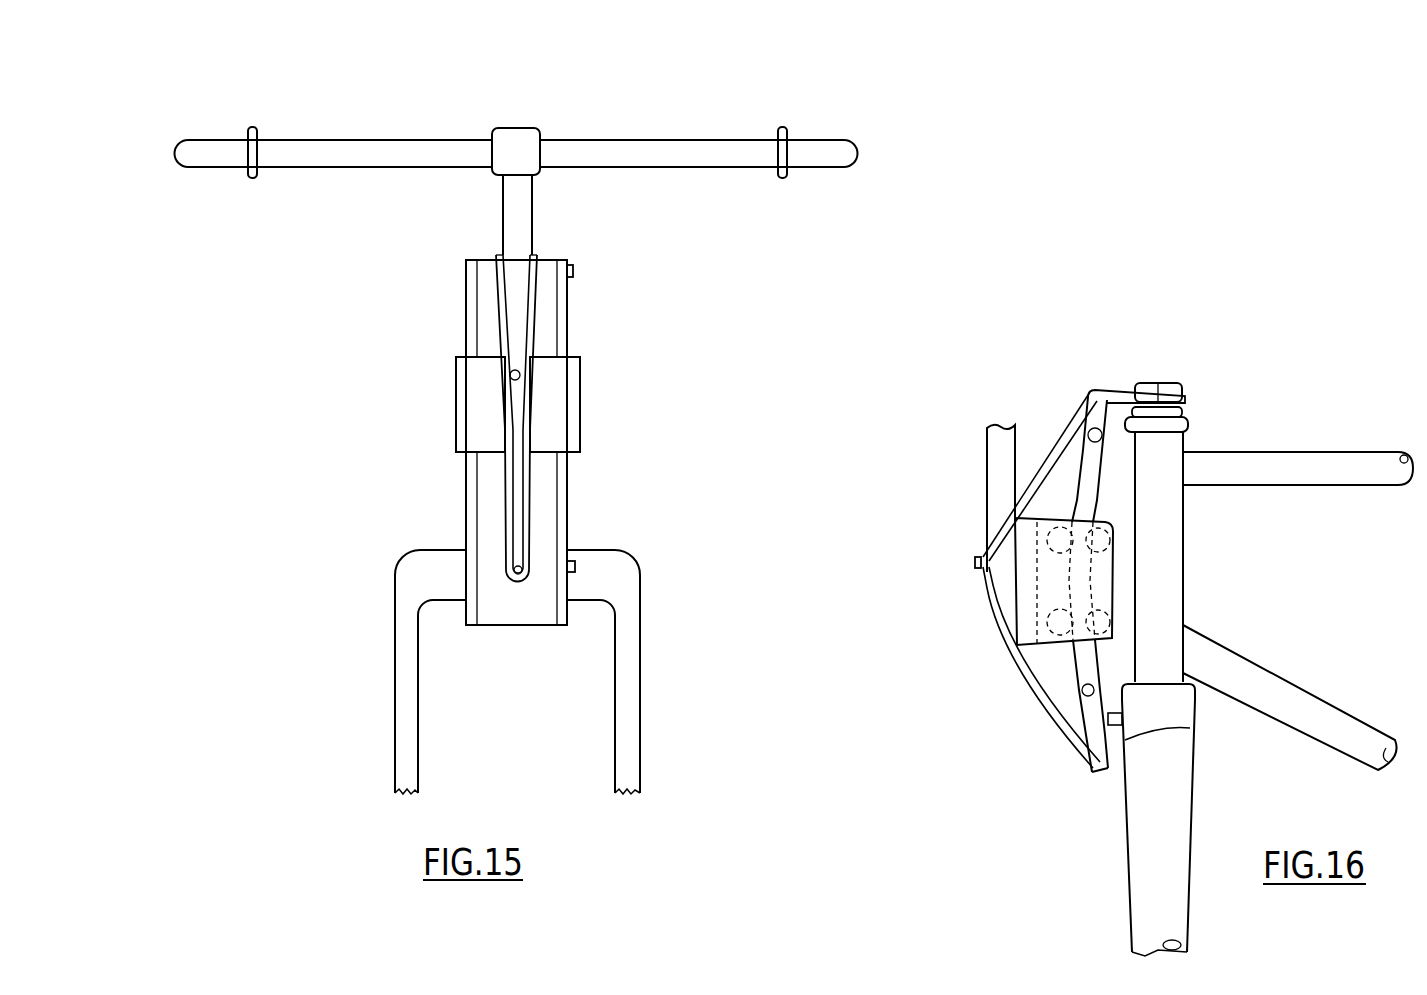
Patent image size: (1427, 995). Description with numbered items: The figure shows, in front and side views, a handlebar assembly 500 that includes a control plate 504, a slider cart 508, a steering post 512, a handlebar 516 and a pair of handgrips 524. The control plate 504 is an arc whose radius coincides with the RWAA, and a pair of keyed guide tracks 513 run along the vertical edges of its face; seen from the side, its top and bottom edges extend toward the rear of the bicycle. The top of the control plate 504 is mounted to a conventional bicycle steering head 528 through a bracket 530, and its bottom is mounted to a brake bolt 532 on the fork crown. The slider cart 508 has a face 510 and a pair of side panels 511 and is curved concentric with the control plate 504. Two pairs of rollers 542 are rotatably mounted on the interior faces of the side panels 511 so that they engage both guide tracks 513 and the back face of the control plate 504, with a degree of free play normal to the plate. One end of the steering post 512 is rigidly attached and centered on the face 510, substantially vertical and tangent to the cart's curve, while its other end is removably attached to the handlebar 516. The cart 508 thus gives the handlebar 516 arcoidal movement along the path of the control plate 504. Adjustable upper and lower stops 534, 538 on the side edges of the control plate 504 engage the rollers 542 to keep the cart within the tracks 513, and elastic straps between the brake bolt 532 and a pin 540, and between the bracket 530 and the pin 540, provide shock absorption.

In FIG. 15, the handlebar assembly 500 is at (712, 113).
In FIG. 15, the control plate 504 is at (548, 510).
In FIG. 16, the control plate 504 is at (1267, 694).
In FIG. 15, the slider cart 508 is at (570, 420).
In FIG. 16, the slider cart 508 is at (1022, 630).
In FIG. 15, the face 510 is at (470, 415).
In FIG. 16, the side panels 511 is at (1103, 597).
In FIG. 15, the steering post 512 is at (520, 238).
In FIG. 16, the steering post 512 is at (987, 490).
In FIG. 15, the keyed guide tracks 513 is at (466, 300).
In FIG. 16, the keyed guide tracks 513 is at (1085, 753).
In FIG. 15, the handlebar 516 is at (702, 155).
In FIG. 15, the handgrips 524 is at (848, 148).
In FIG. 16, the bicycle steering head 528 is at (1186, 422).
In FIG. 16, the bracket 530 is at (1120, 398).
In FIG. 15, the brake bolt 532 is at (516, 580).
In FIG. 16, the brake bolt 532 is at (1185, 728).
In FIG. 15, the upper stop 534 is at (575, 268).
In FIG. 16, the upper stop 534 is at (1088, 425).
In FIG. 15, the lower stop 538 is at (577, 567).
In FIG. 16, the lower stop 538 is at (1084, 692).
In FIG. 15, the pin 540 is at (510, 377).
In FIG. 16, the pin 540 is at (973, 562).
In FIG. 16, the rollers 542 is at (1108, 548).